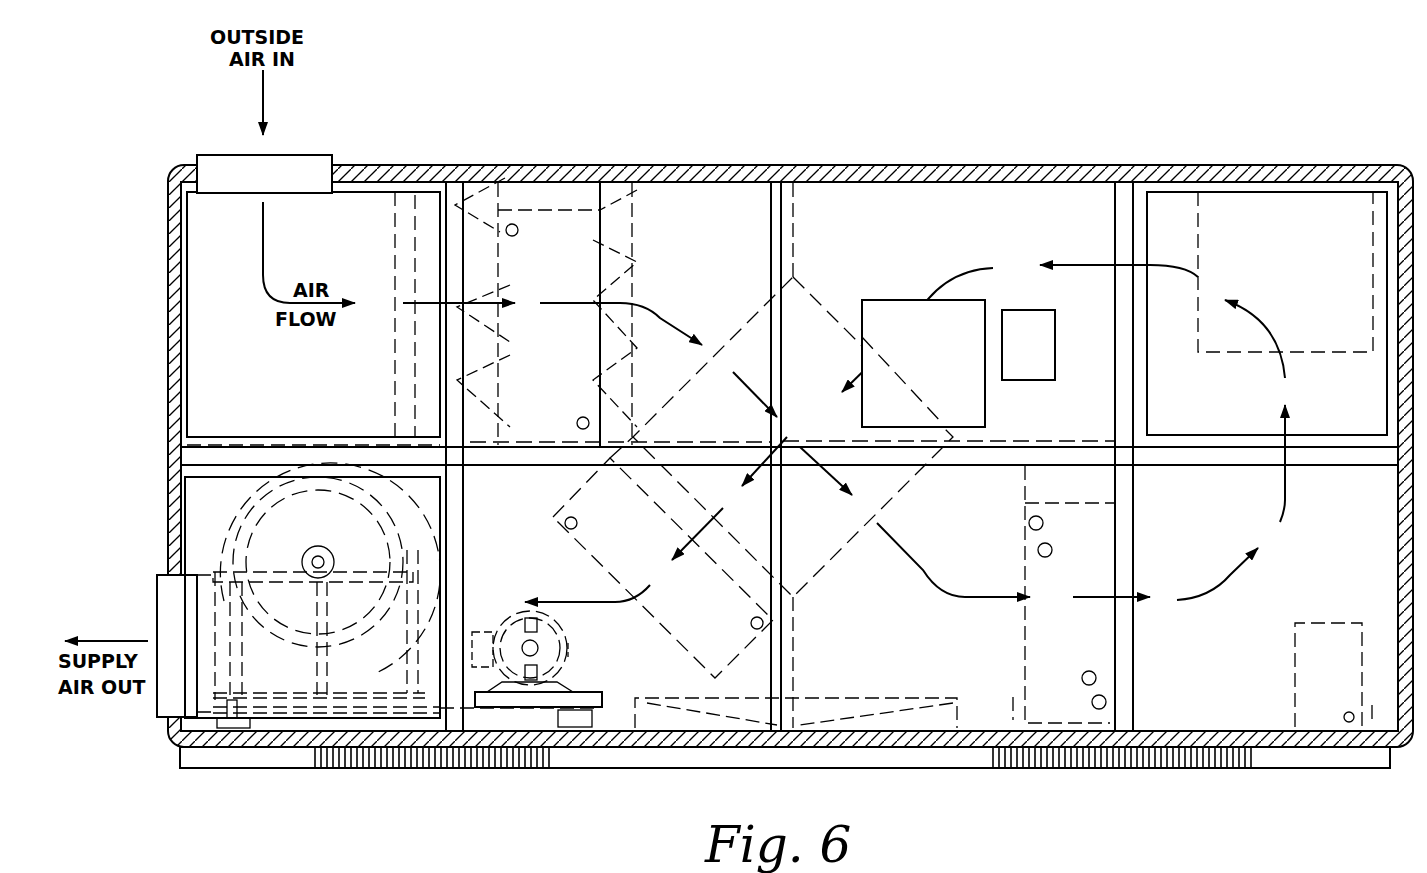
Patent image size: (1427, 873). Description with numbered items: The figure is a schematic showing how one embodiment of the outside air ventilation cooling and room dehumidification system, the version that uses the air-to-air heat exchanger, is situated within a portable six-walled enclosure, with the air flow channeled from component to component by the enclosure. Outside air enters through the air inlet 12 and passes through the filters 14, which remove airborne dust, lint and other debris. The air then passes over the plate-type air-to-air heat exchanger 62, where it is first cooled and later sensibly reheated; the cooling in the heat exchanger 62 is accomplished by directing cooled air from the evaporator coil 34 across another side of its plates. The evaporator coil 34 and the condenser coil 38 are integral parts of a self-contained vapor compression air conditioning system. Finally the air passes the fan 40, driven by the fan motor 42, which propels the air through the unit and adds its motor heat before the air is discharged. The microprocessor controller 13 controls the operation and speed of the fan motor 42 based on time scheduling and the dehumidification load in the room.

The air inlet 12 is at (320, 154).
The microprocessor controller 13 is at (1306, 273).
The filters 14 is at (482, 262).
The evaporator coil 34 is at (1085, 648).
The condenser coil 38 is at (640, 545).
The fan 40 is at (335, 532).
The fan motor 42 is at (573, 650).
The plate-type air-to-air heat exchanger 62 is at (826, 363).